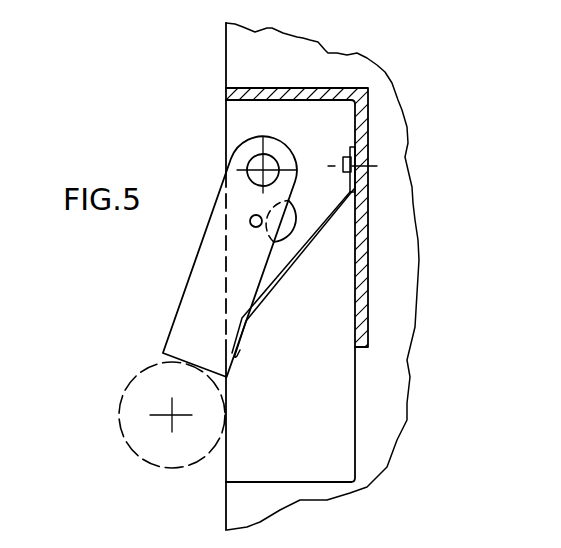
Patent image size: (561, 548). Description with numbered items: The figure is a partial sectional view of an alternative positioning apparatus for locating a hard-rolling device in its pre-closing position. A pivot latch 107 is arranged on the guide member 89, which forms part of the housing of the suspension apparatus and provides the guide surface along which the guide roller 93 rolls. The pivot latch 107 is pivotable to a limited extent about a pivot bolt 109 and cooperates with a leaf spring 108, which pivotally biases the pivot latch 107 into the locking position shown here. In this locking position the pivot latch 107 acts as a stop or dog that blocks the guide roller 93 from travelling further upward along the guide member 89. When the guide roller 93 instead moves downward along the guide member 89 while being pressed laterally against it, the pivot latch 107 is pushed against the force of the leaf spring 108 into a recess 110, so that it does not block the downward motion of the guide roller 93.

The pivot latch 107 is at (203, 261).
The leaf spring 108 is at (292, 273).
The pivot bolt 109 is at (249, 168).
The recess 110 is at (345, 377).
The guide roller 93 is at (127, 397).
The guide surface 89 is at (226, 491).